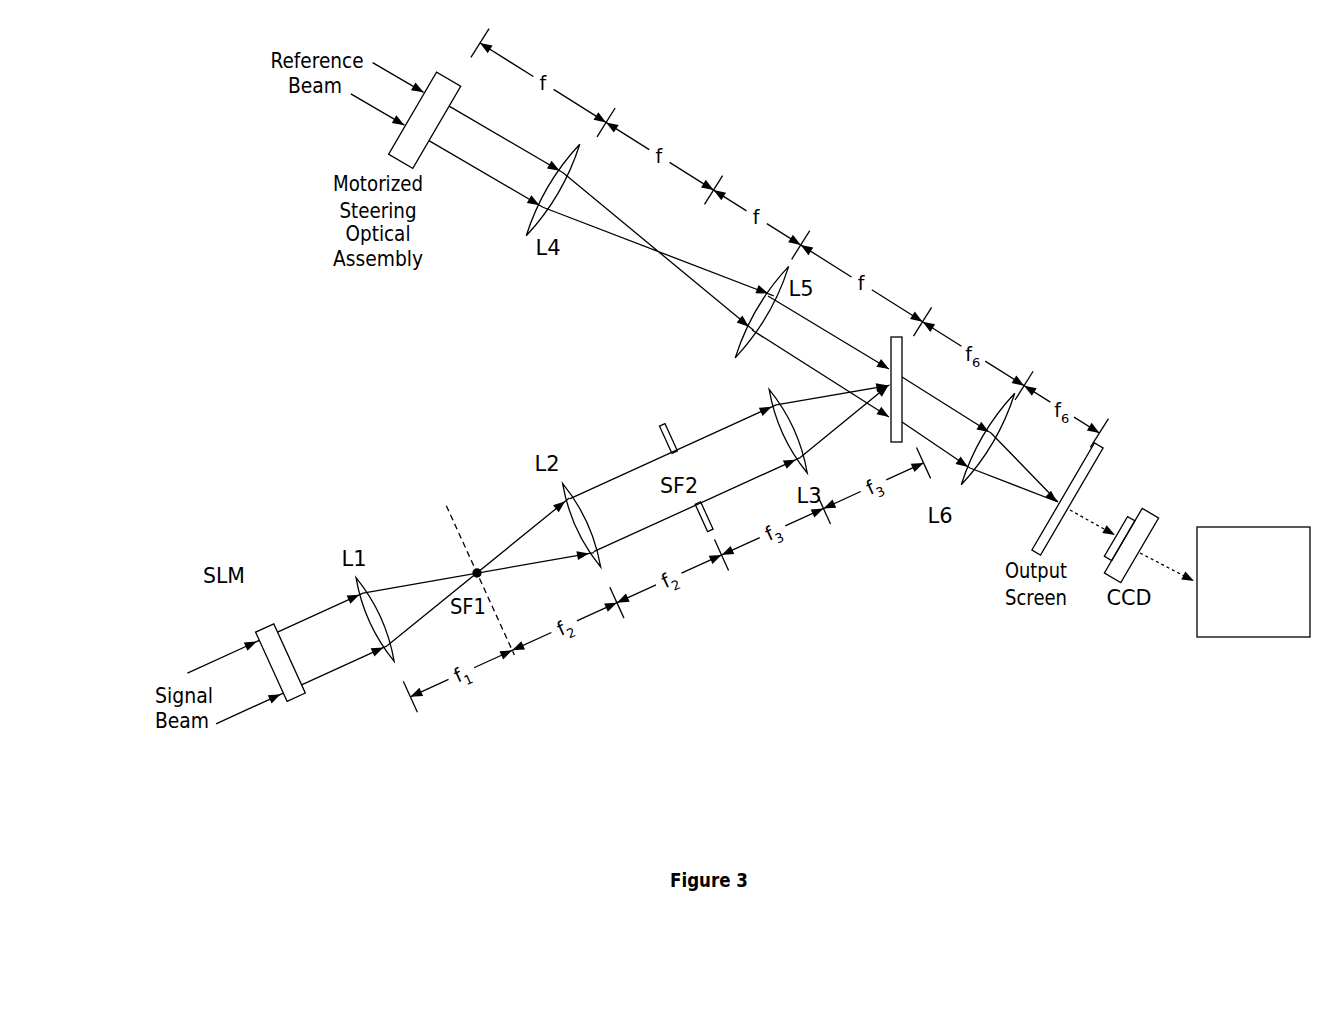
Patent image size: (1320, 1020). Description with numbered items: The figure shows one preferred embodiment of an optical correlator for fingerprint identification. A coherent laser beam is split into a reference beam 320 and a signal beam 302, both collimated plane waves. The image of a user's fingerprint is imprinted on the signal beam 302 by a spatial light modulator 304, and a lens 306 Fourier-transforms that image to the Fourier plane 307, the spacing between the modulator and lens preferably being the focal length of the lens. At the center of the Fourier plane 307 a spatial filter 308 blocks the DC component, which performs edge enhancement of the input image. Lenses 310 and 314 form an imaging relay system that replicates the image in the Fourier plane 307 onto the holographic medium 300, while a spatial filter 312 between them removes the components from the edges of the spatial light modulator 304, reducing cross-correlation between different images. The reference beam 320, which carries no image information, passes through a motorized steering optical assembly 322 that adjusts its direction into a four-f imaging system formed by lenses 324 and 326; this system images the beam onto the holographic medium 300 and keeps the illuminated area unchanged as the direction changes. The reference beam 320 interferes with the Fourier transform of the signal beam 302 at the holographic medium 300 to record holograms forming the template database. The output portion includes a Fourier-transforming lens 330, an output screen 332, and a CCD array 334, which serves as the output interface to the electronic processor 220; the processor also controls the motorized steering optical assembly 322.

The electronic processor 220 is at (1253, 527).
The holographic medium 300 is at (893, 337).
The signal beam 302 is at (247, 715).
The spatial light modulator 304 is at (268, 635).
The lens 306 is at (355, 595).
The Fourier plane 307 is at (450, 506).
The spatial filter 308 is at (473, 570).
The lens 310 is at (568, 497).
The spatial filter 312 is at (658, 433).
The lens 314 is at (782, 425).
The reference beam 320 is at (370, 108).
The motorized steering optical assembly 322 is at (388, 155).
The lens 324 is at (532, 226).
The lens 326 is at (737, 348).
The Fourier-transforming lens 330 is at (963, 485).
The output screen 332 is at (1102, 457).
The CCD array 334 is at (1150, 507).